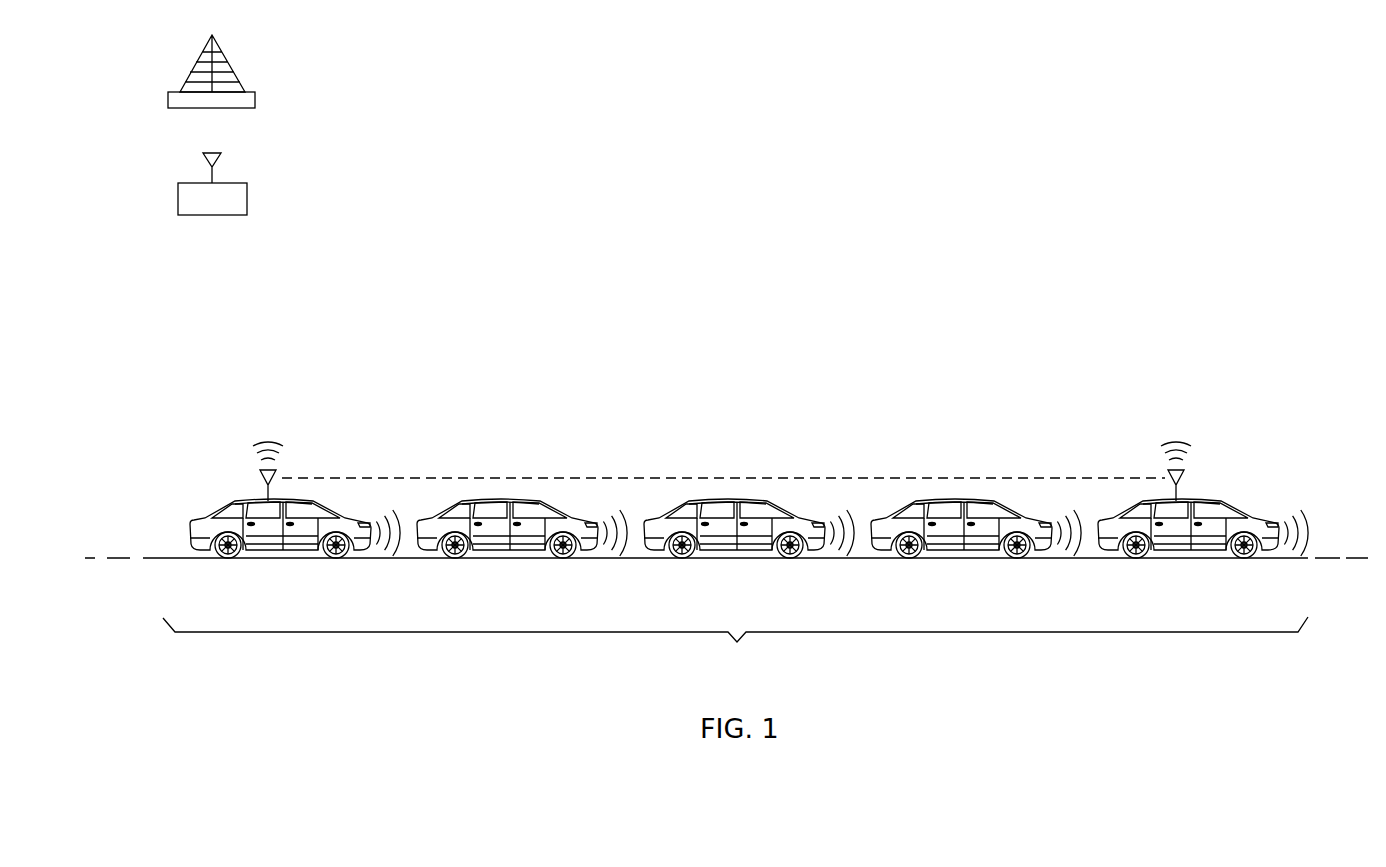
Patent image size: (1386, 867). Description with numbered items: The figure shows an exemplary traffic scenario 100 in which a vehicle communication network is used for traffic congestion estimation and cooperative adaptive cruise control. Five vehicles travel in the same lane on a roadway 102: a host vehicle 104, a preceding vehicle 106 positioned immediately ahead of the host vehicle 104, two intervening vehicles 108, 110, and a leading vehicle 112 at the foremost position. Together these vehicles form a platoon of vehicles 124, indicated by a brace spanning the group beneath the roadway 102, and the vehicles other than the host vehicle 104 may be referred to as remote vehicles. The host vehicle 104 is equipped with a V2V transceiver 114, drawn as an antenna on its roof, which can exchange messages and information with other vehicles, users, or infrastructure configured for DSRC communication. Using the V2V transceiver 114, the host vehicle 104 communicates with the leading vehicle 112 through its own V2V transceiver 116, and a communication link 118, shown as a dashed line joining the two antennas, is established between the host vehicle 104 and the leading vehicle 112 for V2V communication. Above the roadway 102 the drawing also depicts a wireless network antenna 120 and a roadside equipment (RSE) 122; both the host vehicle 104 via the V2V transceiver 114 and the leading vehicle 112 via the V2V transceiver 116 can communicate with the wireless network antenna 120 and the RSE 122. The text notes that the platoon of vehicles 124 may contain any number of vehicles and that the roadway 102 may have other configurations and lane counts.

The traffic scenario 100 is at (1050, 117).
The roadway 102 is at (181, 562).
The host vehicle 104 is at (258, 545).
The preceding vehicle 106 is at (526, 545).
The intervening vehicle 108 is at (708, 545).
The intervening vehicle 110 is at (978, 545).
The leading vehicle 112 is at (1162, 545).
The V2V transceiver 114 is at (262, 478).
The V2V transceiver 116 is at (1187, 480).
The communication link 118 is at (722, 478).
The wireless network antenna 120 is at (233, 66).
The roadside equipment (RSE) 122 is at (210, 216).
The platoon of vehicles 124 is at (735, 644).